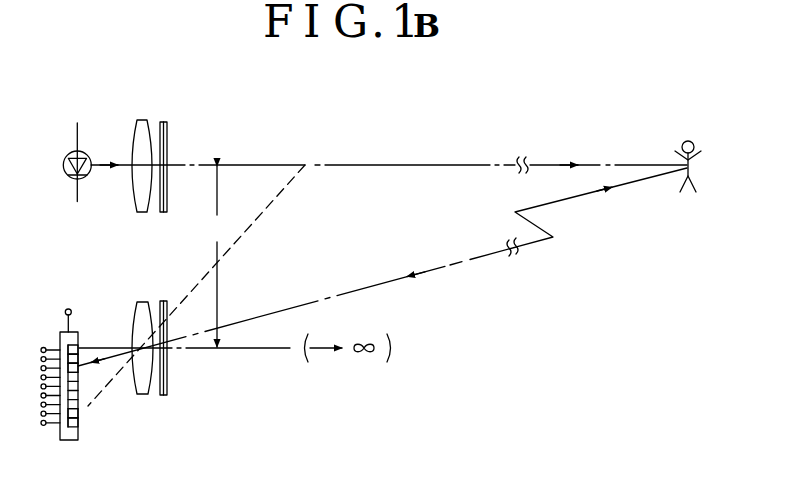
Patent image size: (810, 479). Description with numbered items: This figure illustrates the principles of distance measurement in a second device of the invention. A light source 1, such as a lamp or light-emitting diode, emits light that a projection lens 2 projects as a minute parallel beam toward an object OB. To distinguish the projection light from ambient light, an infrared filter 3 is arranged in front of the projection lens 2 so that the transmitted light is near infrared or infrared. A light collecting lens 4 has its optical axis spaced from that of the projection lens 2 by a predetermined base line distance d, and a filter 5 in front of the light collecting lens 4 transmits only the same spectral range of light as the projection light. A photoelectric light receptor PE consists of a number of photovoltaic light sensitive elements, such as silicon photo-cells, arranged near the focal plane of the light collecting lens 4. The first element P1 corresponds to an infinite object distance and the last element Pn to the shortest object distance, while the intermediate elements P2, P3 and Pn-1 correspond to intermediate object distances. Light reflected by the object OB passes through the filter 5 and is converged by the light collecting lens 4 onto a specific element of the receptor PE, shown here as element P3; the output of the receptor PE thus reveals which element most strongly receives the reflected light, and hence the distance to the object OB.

The light source 1 is at (68, 153).
The projection lens 2 is at (134, 122).
The infrared filter 3 is at (167, 125).
The light collecting lens 4 is at (136, 305).
The filter 5 is at (164, 300).
The photoelectric light receptor PE is at (62, 337).
The first photosensitive element P1 is at (79, 348).
The second photosensitive element P2 is at (79, 356).
The third photosensitive element P3 is at (79, 369).
The (n-1)th photosensitive element Pn-1 is at (79, 413).
The n-th photosensitive element Pn is at (79, 426).
The object OB is at (687, 141).
The base line distance d is at (216, 256).